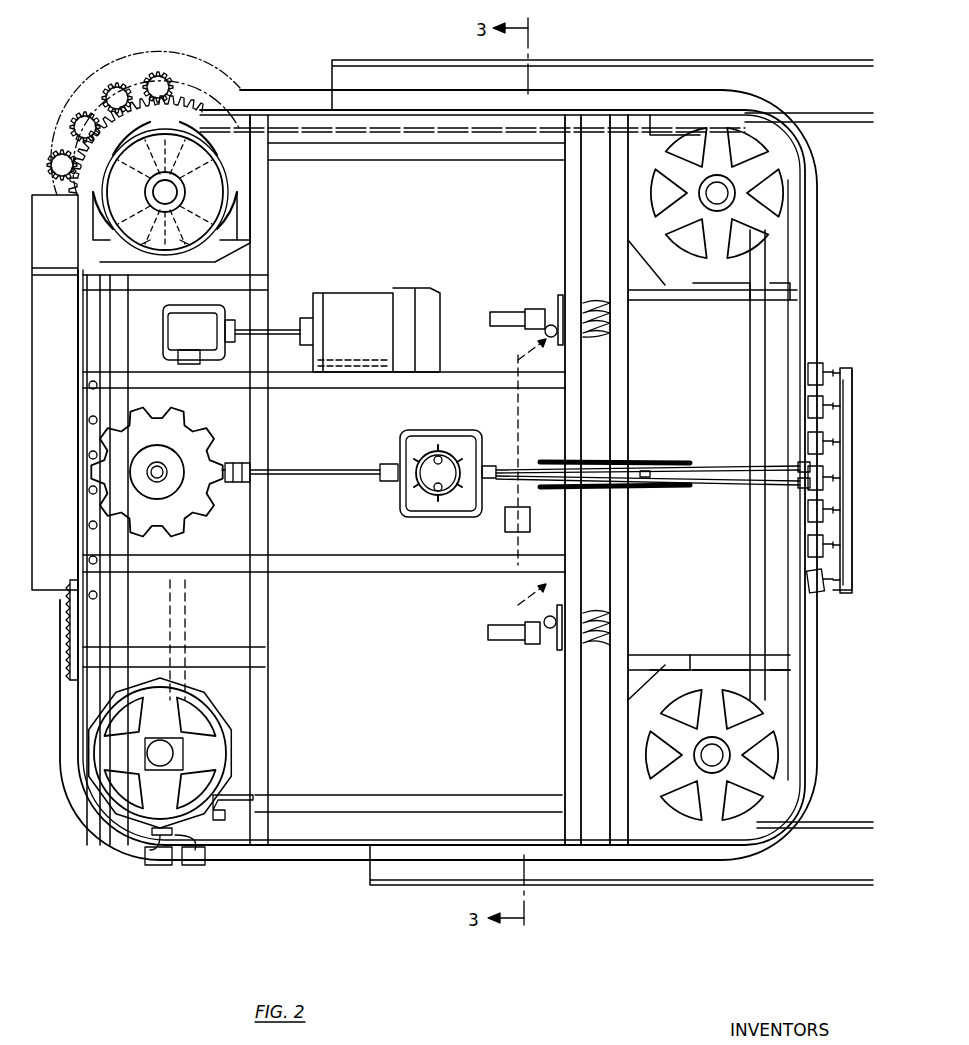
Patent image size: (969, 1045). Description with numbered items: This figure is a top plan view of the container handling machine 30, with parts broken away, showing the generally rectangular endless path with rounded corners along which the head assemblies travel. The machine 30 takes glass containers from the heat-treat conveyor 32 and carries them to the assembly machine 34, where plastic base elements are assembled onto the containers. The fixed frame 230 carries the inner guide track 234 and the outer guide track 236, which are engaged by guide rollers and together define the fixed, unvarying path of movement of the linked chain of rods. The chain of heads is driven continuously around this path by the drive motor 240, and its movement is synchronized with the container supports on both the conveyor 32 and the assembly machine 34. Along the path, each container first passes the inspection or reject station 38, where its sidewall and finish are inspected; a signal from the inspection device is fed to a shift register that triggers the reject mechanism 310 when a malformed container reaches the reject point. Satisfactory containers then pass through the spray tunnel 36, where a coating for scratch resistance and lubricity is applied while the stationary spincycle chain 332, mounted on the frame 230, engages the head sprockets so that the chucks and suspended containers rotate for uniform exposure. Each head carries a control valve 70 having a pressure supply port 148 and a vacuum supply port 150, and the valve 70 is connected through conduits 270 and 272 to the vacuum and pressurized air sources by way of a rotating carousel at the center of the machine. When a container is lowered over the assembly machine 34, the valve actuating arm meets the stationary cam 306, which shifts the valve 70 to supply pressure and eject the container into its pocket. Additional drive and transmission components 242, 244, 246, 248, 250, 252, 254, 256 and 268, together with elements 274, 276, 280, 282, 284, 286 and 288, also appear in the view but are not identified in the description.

The machine 30 is at (808, 296).
The heat-treat conveyor 32 is at (764, 60).
The assembly machine 34 is at (727, 862).
The spray tunnel 36 is at (50, 592).
The reject station 38 is at (45, 205).
The valve 70 is at (810, 392).
The pressure supply port 148 is at (800, 485).
The vacuum supply port 150 is at (800, 467).
The frame 230 is at (312, 578).
The inner guide track 234 is at (343, 132).
The outer guide track 236 is at (258, 110).
The drive motor 240 is at (353, 305).
The gear reducer 242 is at (205, 345).
The drive sprocket 244 is at (190, 515).
The sprocket hub 246 is at (212, 444).
The gear housing 248 is at (215, 236).
The drive wheel 250 is at (172, 195).
The pinion gears 252 is at (98, 117).
The selector housing 254 is at (388, 521).
The drive shaft 256 is at (275, 480).
The selector hub 268 is at (438, 450).
The conduit 270 is at (657, 488).
The conduit 272 is at (660, 466).
The sensor bracket 274 is at (845, 370).
The sensor bracket lower end 276 is at (852, 600).
The support column 280 is at (612, 566).
The support column 282 is at (622, 540).
The actuator 284 is at (508, 312).
The actuator linkage 286 is at (518, 430).
The switch block 288 is at (505, 523).
The stationary cam 306 is at (590, 835).
The reject station 310 is at (101, 812).
The spincycle chain 332 is at (176, 103).